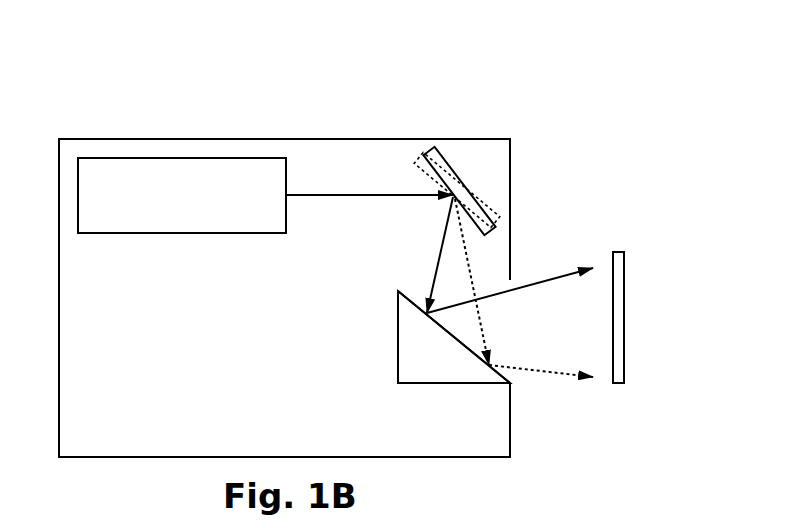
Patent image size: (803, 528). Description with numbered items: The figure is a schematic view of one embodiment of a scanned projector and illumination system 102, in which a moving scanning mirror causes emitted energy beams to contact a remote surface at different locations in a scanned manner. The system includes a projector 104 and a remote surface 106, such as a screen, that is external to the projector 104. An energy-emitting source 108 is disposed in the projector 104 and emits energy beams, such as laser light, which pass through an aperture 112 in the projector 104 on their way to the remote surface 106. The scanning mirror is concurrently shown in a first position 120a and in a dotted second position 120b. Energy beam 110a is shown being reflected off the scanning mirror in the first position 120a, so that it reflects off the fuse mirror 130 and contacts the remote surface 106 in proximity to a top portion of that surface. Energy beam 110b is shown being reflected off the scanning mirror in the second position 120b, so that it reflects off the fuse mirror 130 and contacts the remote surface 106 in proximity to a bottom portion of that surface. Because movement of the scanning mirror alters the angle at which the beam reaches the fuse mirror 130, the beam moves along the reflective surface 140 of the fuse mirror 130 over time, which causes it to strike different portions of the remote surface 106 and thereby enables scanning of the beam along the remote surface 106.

The scanned projector and illumination system 102 is at (513, 114).
The projector 104 is at (104, 138).
The remote surface 106 is at (624, 293).
The energy-emitting source 108 is at (227, 158).
The energy beam 110a is at (328, 194).
The energy beam 110b is at (387, 194).
The aperture 112 is at (543, 384).
The first position of the scanning mirror 120a is at (436, 151).
The second position of the scanning mirror 120b is at (492, 214).
The fuse mirror 130 is at (398, 341).
The reflective surface 140 is at (410, 293).